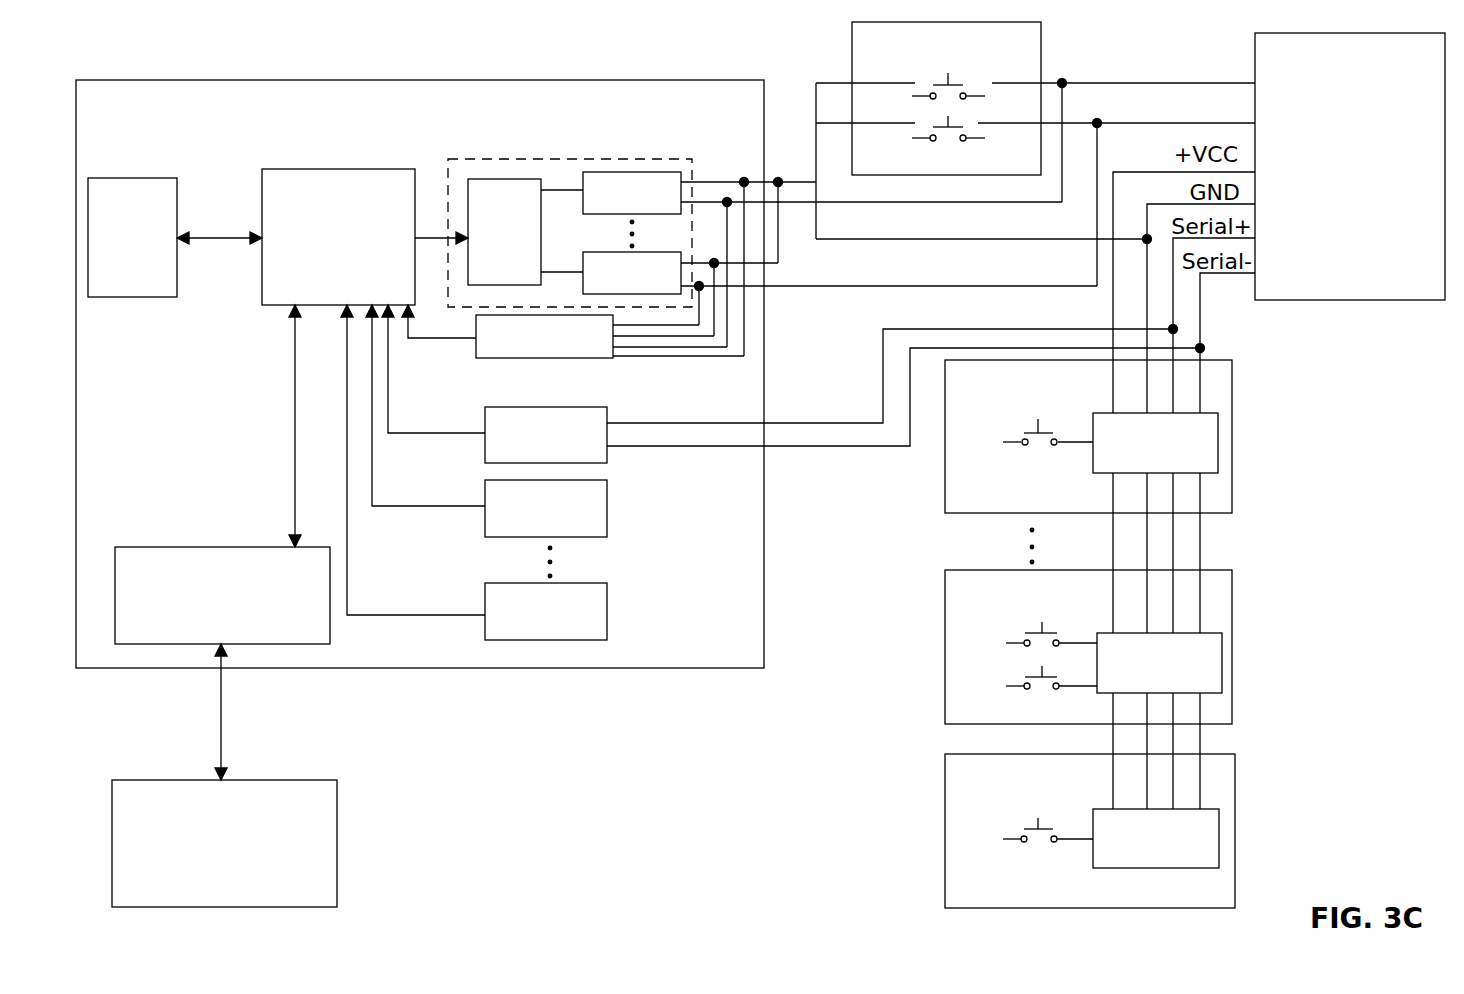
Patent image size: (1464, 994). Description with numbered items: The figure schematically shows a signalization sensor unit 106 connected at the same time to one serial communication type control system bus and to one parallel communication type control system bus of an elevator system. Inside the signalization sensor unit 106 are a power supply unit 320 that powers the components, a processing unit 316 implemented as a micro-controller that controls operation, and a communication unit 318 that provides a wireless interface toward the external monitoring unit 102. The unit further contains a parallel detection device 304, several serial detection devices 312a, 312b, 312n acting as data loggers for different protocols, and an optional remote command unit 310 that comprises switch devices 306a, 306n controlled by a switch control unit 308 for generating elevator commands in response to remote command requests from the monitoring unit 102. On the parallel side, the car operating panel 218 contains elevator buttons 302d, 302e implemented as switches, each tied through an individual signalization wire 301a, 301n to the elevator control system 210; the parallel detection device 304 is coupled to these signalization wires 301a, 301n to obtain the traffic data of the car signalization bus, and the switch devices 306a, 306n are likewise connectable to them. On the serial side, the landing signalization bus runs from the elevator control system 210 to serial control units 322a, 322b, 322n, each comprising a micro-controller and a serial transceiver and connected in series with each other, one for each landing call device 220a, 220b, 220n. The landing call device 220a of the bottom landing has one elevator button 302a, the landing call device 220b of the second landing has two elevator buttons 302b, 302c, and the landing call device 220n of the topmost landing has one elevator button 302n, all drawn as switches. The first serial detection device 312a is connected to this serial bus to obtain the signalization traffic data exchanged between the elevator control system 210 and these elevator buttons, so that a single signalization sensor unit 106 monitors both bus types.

The signalization sensor unit 106 is at (151, 122).
The power supply unit 320 is at (110, 264).
The processing unit 316 is at (316, 264).
The remote command unit 310 is at (611, 159).
The switch control unit 308 is at (504, 232).
The first switch device 306a is at (632, 193).
The n:th switch device 306n is at (632, 273).
The parallel detection device 304 is at (544, 336).
The first serial detection device 312a is at (546, 435).
The serial detection device 312b is at (546, 508).
The serial detection device 312n is at (546, 611).
The communication unit 318 is at (200, 622).
The monitoring unit 102 is at (203, 857).
The car operating panel 218 is at (921, 61).
The elevator button 302e is at (960, 64).
The elevator button 302d is at (940, 148).
The signalization wire 301a is at (1115, 82).
The n:th signalization wire 301n is at (1162, 123).
The elevator control system 210 is at (1328, 179).
The landing call device 220n is at (1015, 395).
The serial control unit 322n is at (1126, 454).
The elevator button 302n is at (1034, 462).
The landing call device 220b is at (1022, 609).
The elevator button 302c is at (1058, 580).
The elevator button 302b is at (1032, 696).
The serial control unit 322b is at (1130, 674).
The landing call device 220a is at (1015, 789).
The elevator button 302a is at (1032, 853).
The serial control unit 322a is at (1126, 850).